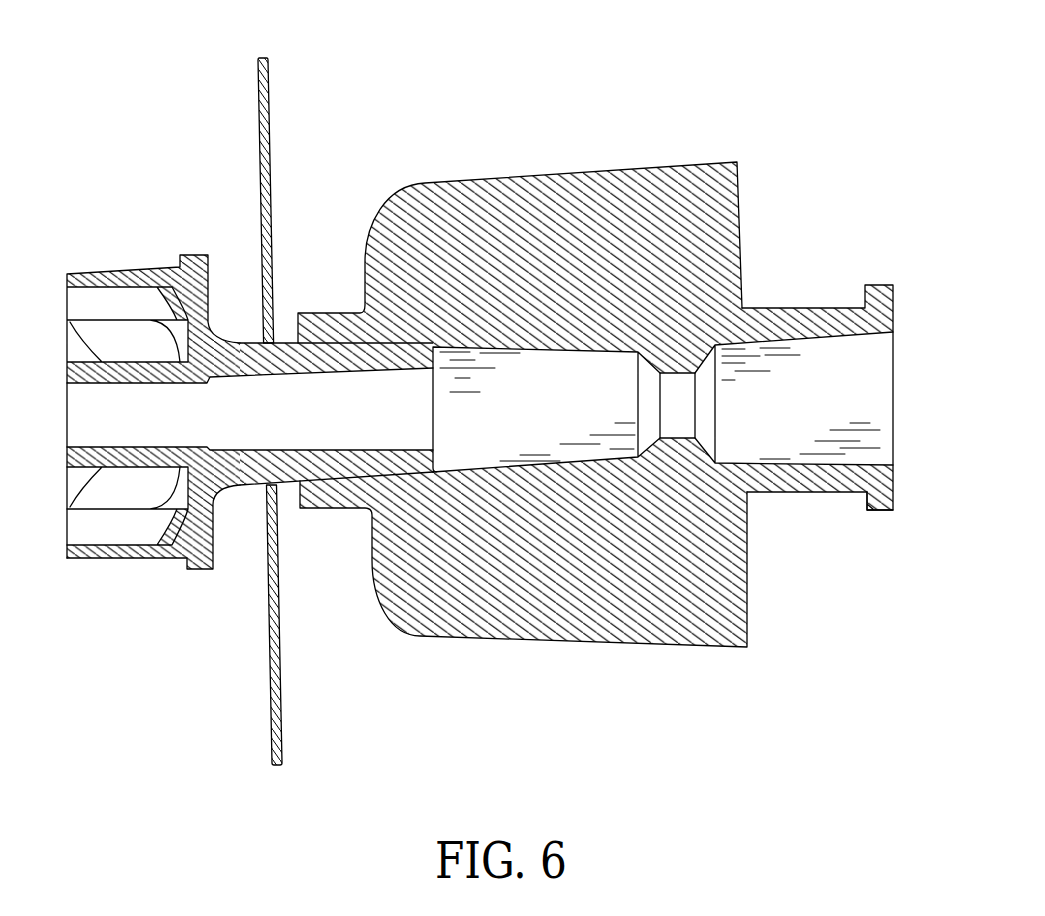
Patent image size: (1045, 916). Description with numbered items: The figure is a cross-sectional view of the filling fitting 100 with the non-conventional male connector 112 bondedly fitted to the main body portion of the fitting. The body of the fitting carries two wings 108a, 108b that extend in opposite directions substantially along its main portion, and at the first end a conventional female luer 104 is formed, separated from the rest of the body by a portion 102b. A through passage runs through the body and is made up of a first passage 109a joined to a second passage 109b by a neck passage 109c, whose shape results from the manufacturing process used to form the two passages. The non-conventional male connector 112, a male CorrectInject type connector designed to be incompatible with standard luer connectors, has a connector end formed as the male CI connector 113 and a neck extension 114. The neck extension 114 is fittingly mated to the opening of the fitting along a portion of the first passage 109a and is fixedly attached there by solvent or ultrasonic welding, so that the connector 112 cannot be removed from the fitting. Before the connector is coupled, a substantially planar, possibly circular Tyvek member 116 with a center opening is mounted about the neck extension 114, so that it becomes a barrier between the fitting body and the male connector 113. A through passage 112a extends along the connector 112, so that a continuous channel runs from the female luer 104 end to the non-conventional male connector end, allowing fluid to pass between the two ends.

The filling fitting 100 is at (668, 696).
The portion of body 102b is at (807, 307).
The female luer 104 is at (882, 513).
The wing 108a is at (507, 202).
The wing 108b is at (535, 603).
The first passage 109a is at (573, 412).
The second passage 109b is at (833, 412).
The neck passage 109c is at (678, 440).
The non-conventional male connector 112 is at (86, 240).
The through passage 112a is at (247, 433).
The male CI connector 113 is at (128, 558).
The neck extension 114 is at (343, 462).
The planar member 116 is at (268, 66).